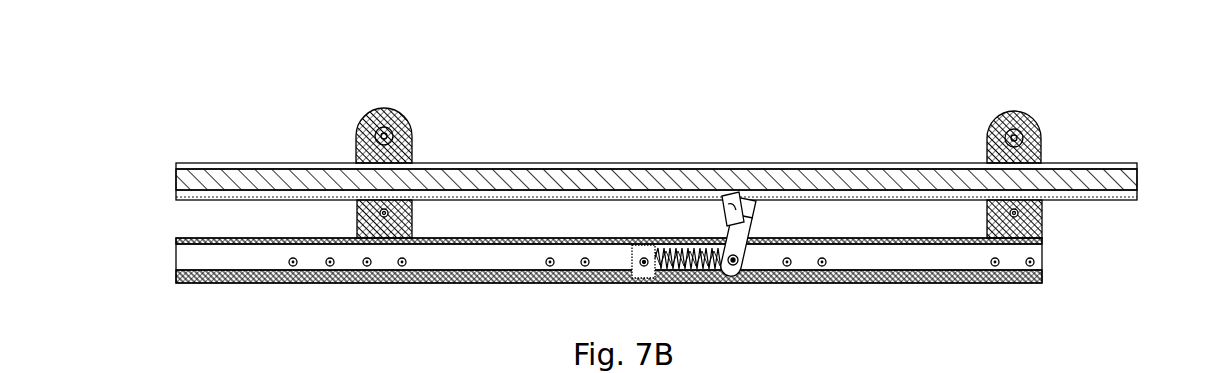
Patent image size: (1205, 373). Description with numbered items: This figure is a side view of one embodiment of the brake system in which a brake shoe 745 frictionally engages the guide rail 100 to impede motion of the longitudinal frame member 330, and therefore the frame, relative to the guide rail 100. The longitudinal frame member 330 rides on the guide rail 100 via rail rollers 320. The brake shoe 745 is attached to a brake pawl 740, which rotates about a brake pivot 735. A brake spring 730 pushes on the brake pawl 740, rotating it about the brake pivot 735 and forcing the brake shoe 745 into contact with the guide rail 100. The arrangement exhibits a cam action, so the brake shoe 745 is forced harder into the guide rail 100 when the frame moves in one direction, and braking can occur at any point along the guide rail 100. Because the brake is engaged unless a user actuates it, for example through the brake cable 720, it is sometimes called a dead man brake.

The guide rail 100 is at (867, 165).
The rail rollers 320 is at (403, 115).
The longitudinal frame member 330 is at (953, 258).
The brake cable 720 is at (563, 263).
The brake spring 730 is at (703, 263).
The brake pivot 735 is at (743, 263).
The brake pawl 740 is at (757, 206).
The brake shoe 745 is at (733, 208).